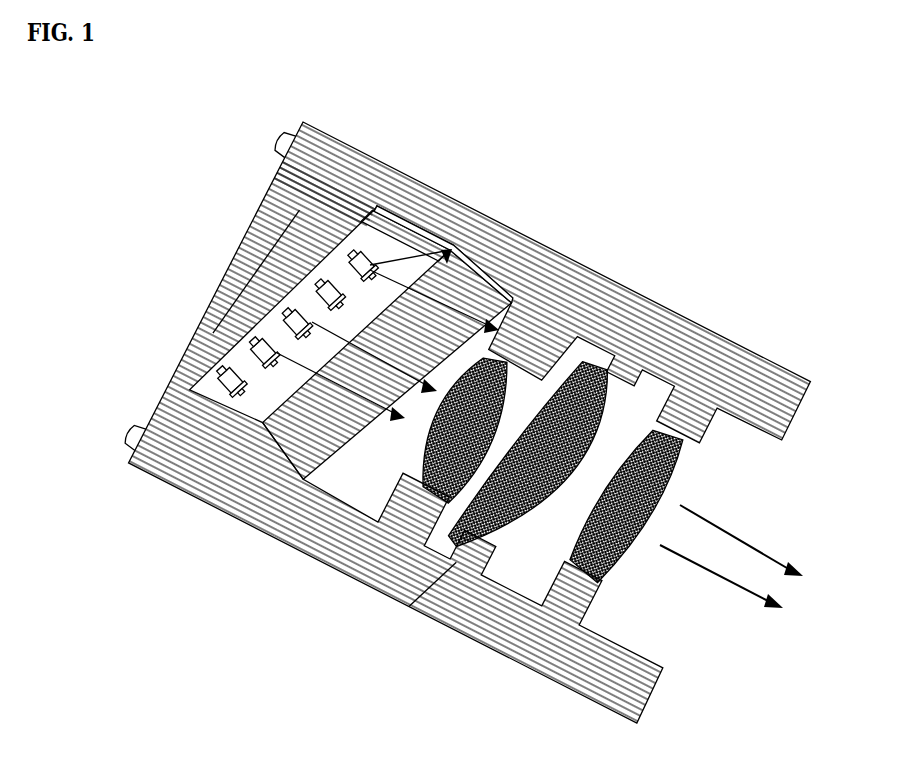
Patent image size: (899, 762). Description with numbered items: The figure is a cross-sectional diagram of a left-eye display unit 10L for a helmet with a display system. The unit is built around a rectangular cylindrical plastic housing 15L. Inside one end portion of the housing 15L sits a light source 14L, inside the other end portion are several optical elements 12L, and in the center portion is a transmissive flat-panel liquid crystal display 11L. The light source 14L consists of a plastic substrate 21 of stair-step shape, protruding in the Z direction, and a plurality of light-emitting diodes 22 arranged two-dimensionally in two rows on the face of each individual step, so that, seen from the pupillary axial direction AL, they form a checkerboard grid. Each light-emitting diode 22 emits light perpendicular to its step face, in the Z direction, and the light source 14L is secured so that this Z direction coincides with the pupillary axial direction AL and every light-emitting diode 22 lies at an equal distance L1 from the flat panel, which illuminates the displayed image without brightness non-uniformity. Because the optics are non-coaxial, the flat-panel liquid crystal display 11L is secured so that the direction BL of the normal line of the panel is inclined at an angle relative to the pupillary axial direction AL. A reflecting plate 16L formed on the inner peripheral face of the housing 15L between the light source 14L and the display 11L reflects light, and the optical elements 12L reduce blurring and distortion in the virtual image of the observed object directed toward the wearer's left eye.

The left-eye display unit 10L is at (565, 150).
The transmissive flat-panel liquid crystal display 11L is at (223, 457).
The optical elements 12L is at (565, 566).
The light source 14L is at (312, 312).
The rectangular cylindrical plastic housing 15L is at (482, 578).
The reflecting plate 16L is at (415, 192).
The substrate 21 is at (274, 293).
The light-emitting diodes 22 is at (297, 322).
The pupillary axial direction AL is at (228, 285).
The direction of the normal line of the flat-panel BL is at (333, 300).
The distance L1 is at (255, 407).